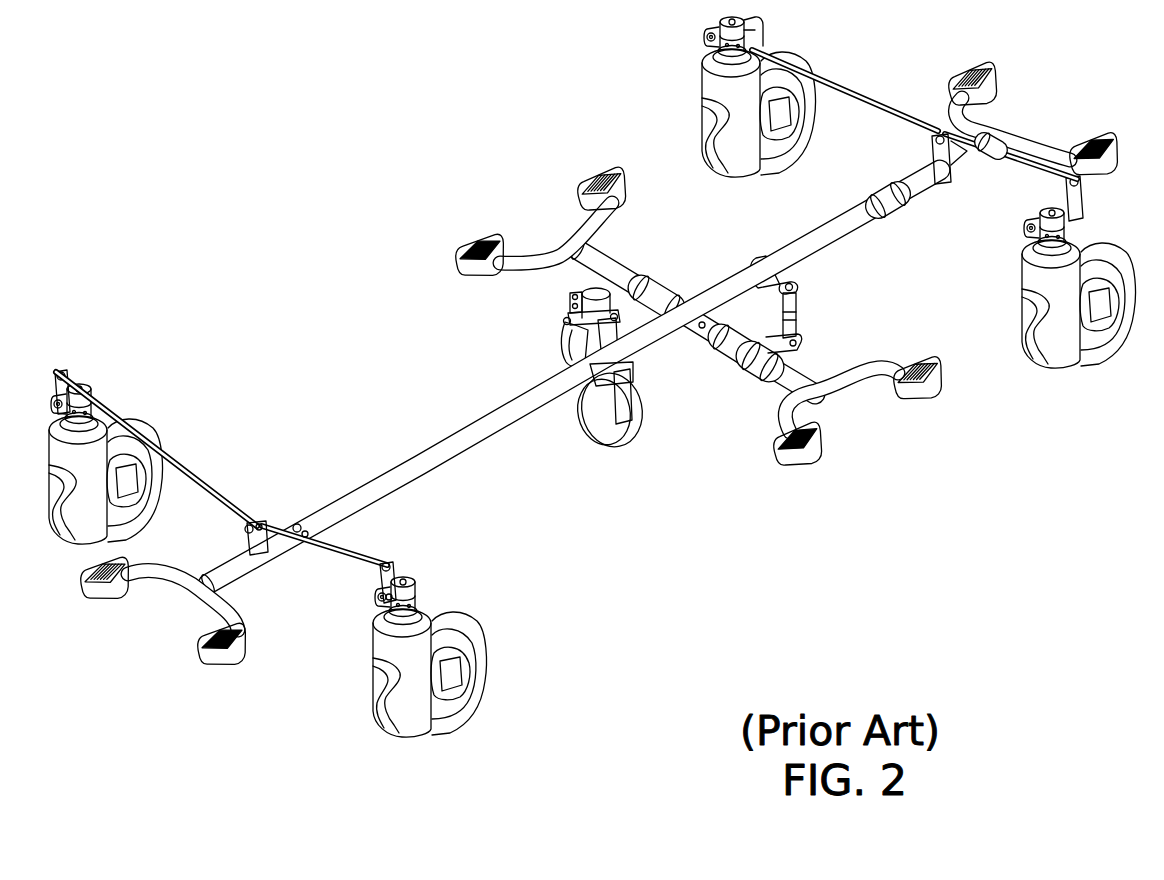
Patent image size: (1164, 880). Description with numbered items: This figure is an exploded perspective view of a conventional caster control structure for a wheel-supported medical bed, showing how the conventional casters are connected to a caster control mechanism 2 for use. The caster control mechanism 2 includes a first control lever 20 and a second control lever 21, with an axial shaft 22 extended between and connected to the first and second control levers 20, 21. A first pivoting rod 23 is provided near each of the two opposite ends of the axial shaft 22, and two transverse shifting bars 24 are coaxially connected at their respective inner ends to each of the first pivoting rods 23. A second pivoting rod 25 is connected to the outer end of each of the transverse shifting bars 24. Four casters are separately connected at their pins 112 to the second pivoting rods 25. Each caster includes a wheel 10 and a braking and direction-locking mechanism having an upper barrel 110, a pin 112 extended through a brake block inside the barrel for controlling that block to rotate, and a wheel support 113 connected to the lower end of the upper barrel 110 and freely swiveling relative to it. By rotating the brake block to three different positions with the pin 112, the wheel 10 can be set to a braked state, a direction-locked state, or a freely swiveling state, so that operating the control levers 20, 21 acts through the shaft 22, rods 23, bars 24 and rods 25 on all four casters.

The caster control mechanism 2 is at (374, 422).
The wheel 10 is at (447, 655).
The upper barrel 110 is at (410, 597).
The pin 112 is at (379, 607).
The wheel support 113 is at (415, 647).
The first control lever 20 is at (200, 590).
The second control lever 21 is at (973, 122).
The axial shaft 22 is at (410, 475).
The first pivoting rod 23 is at (258, 526).
The transverse shifting bar 24 is at (337, 553).
The second pivoting rod 25 is at (382, 588).